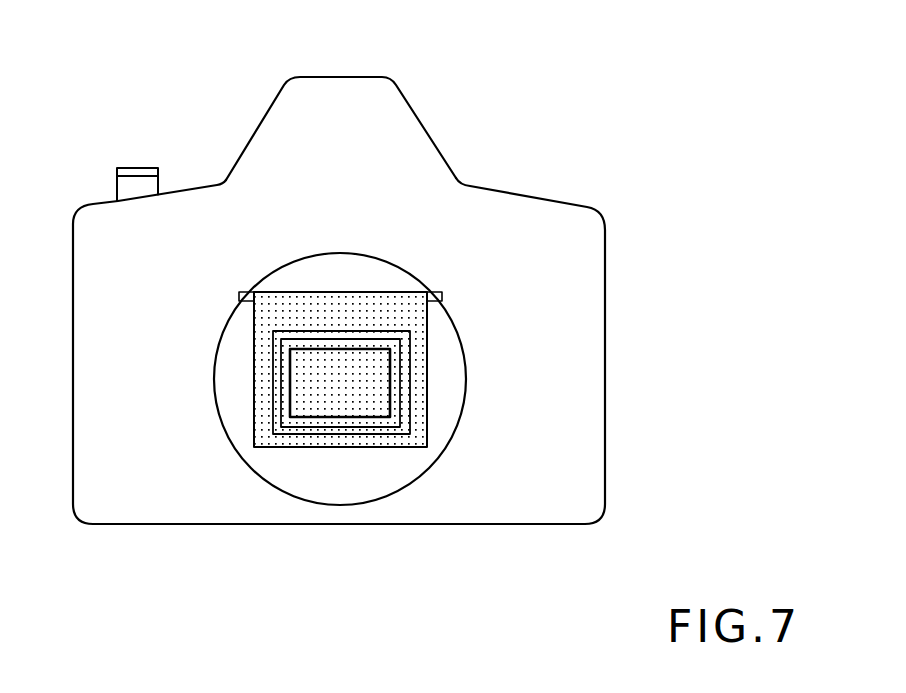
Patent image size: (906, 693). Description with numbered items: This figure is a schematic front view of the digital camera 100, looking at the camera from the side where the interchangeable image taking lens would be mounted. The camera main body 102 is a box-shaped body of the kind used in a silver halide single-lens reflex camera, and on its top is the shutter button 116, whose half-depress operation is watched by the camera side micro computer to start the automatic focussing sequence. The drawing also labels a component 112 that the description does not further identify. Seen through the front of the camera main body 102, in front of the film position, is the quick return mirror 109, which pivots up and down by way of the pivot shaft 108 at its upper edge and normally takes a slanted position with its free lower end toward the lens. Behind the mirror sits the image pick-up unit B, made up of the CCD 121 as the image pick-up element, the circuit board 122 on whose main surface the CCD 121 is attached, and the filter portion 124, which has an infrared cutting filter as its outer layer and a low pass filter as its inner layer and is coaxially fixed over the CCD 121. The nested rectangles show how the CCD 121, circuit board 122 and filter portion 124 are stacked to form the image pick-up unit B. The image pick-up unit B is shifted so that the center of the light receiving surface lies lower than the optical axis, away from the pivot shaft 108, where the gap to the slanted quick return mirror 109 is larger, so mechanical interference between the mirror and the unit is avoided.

The digital camera 100 is at (363, 310).
The camera main body 102 is at (613, 240).
The pentaprism housing 112 is at (413, 108).
The shutter button 116 is at (122, 190).
The pivot shaft 108 is at (442, 296).
The quick return mirror 109 is at (428, 410).
The image pick-up unit B is at (410, 357).
The circuit board 122 is at (268, 398).
The filter portion 124 is at (290, 430).
The CCD 121 is at (315, 418).